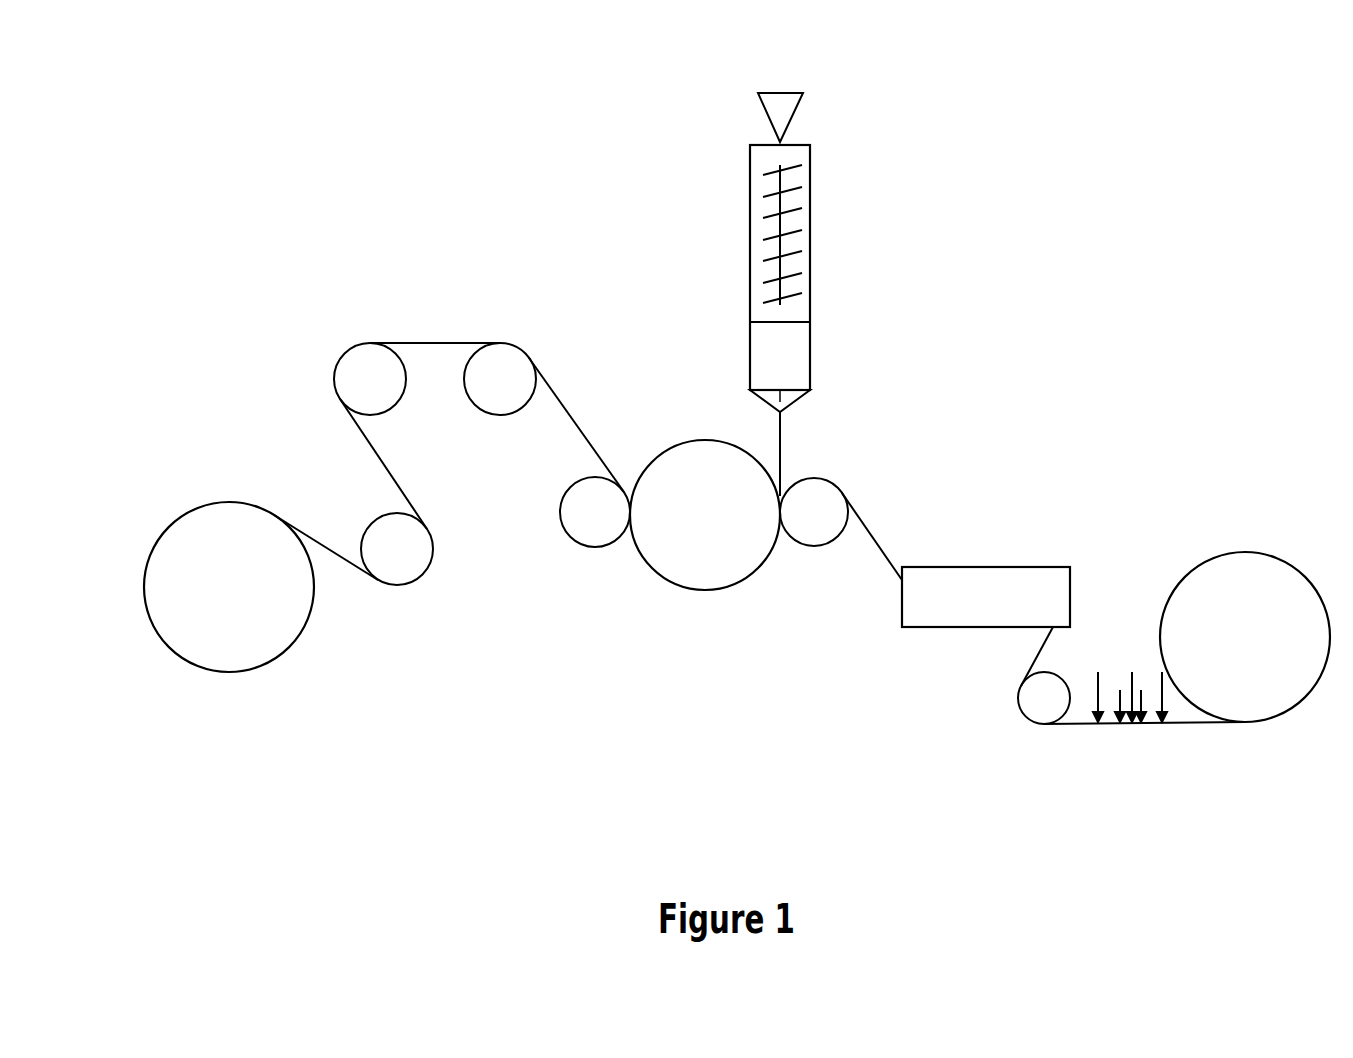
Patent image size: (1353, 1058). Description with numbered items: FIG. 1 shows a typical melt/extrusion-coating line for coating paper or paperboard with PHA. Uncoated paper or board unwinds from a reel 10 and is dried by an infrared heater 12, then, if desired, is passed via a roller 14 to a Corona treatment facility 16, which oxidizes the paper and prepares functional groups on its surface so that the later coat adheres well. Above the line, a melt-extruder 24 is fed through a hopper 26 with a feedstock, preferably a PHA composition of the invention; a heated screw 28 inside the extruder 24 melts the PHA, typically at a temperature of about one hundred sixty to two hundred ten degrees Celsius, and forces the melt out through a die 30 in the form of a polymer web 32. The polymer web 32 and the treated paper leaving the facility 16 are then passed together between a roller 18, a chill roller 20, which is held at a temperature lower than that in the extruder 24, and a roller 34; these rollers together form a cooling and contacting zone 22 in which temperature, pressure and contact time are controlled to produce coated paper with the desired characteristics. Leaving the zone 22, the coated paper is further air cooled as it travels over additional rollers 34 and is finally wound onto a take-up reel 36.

The reel 10 is at (1258, 650).
The infrared heater 12 is at (1119, 717).
The roller 14 is at (1027, 710).
The Corona treatment facility 16 is at (1000, 608).
The roller 18 is at (822, 528).
The chill roller 20 is at (720, 526).
The cooling and contacting zone 22 is at (635, 522).
The melt-extruder 24 is at (812, 268).
The hopper 26 is at (803, 95).
The heated screw 28 is at (790, 178).
The die 30 is at (803, 360).
The polymer web 32 is at (874, 454).
The rollers 34 is at (342, 372).
The take-up reel 36 is at (242, 600).